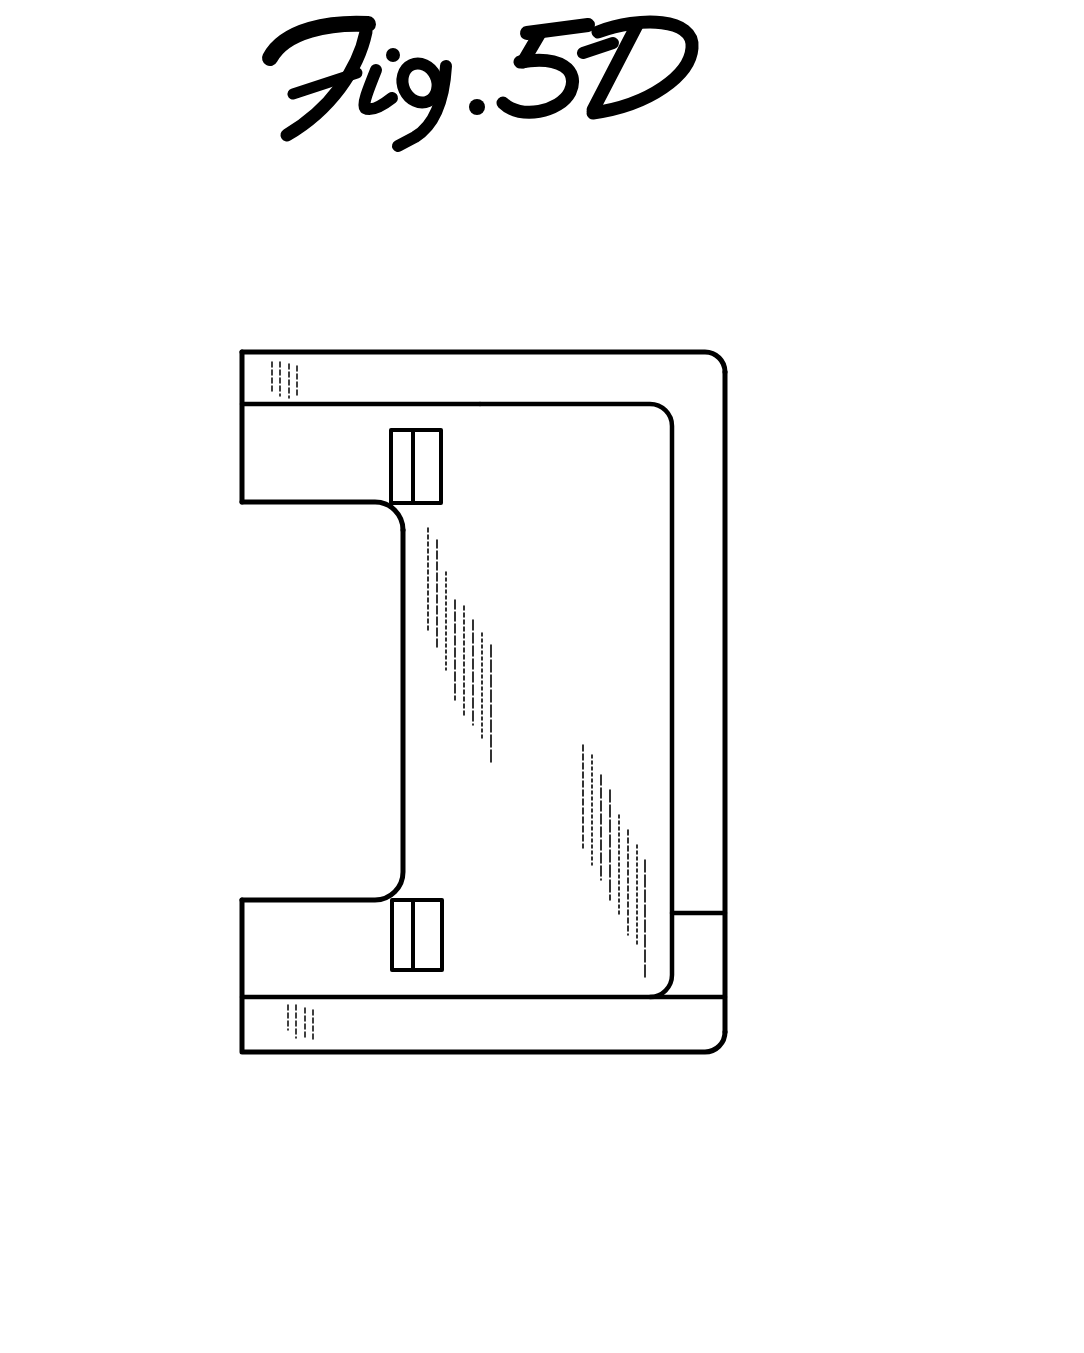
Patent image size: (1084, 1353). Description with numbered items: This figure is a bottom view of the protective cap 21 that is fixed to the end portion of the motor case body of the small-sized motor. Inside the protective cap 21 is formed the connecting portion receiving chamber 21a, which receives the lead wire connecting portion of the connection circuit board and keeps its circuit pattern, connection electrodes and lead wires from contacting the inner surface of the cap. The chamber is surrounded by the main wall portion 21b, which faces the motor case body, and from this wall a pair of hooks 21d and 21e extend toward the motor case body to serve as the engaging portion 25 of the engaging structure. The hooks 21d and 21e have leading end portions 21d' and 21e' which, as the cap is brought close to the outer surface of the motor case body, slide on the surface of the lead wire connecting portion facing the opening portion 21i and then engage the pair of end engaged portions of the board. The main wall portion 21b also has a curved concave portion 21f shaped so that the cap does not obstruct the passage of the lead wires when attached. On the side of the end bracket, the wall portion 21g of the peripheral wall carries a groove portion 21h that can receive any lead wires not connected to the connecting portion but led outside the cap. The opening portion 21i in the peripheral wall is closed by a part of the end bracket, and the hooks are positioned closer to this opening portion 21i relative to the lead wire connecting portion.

The protective cap 21 is at (668, 348).
The connecting portion receiving chamber 21a is at (433, 703).
The main wall portion 21b is at (725, 575).
The hook 21d is at (354, 371).
The leading end portion 21d' is at (659, 421).
The hook 21e is at (369, 1038).
The leading end portion 21e' is at (311, 882).
The curved concave portion 21f is at (317, 502).
The wall portion 21g is at (725, 712).
The groove portion 21h is at (695, 992).
The opening portion 21i is at (280, 405).
The engaging portion 25 is at (442, 480).